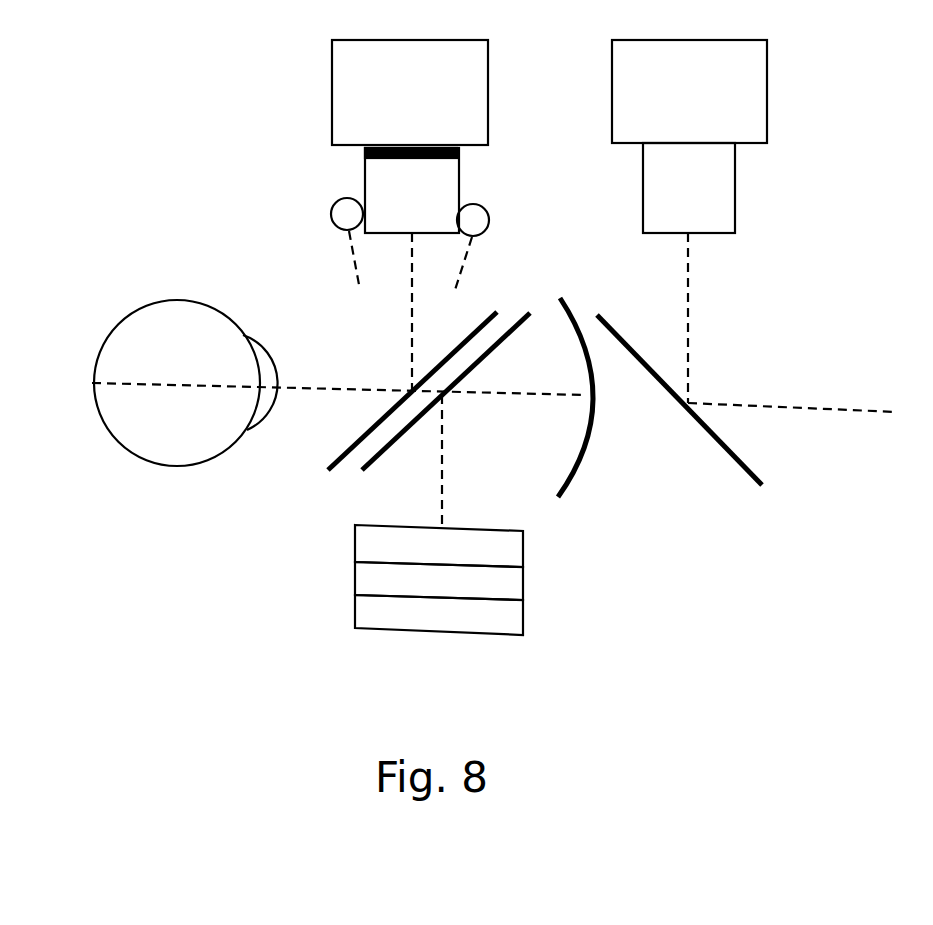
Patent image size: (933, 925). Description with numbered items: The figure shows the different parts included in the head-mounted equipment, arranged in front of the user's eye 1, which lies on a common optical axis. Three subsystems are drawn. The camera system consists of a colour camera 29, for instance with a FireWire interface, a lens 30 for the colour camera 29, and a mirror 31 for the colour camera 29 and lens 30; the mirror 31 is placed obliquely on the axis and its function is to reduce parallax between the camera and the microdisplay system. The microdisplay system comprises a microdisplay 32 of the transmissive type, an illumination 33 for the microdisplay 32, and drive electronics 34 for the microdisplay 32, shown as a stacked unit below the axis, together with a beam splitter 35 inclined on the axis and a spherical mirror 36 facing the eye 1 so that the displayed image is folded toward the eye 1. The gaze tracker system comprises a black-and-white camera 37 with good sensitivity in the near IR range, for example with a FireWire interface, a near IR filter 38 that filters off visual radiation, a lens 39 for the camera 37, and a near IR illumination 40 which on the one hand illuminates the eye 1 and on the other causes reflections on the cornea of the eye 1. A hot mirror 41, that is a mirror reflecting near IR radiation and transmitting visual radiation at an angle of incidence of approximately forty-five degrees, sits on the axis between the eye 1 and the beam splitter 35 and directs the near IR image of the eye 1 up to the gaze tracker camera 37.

The eye 1 is at (168, 402).
The colour camera 29 is at (737, 85).
The lens 30 is at (702, 218).
The mirror 31 is at (635, 345).
The microdisplay 32 is at (528, 543).
The illumination 33 is at (528, 580).
The drive electronics 34 is at (528, 615).
The beam splitter 35 is at (433, 405).
The spherical mirror 36 is at (600, 447).
The black-and-white camera 37 is at (365, 105).
The near IR filter 38 is at (365, 151).
The lens 39 is at (385, 180).
The near IR illumination 40 is at (468, 222).
The hot mirror 41 is at (353, 433).